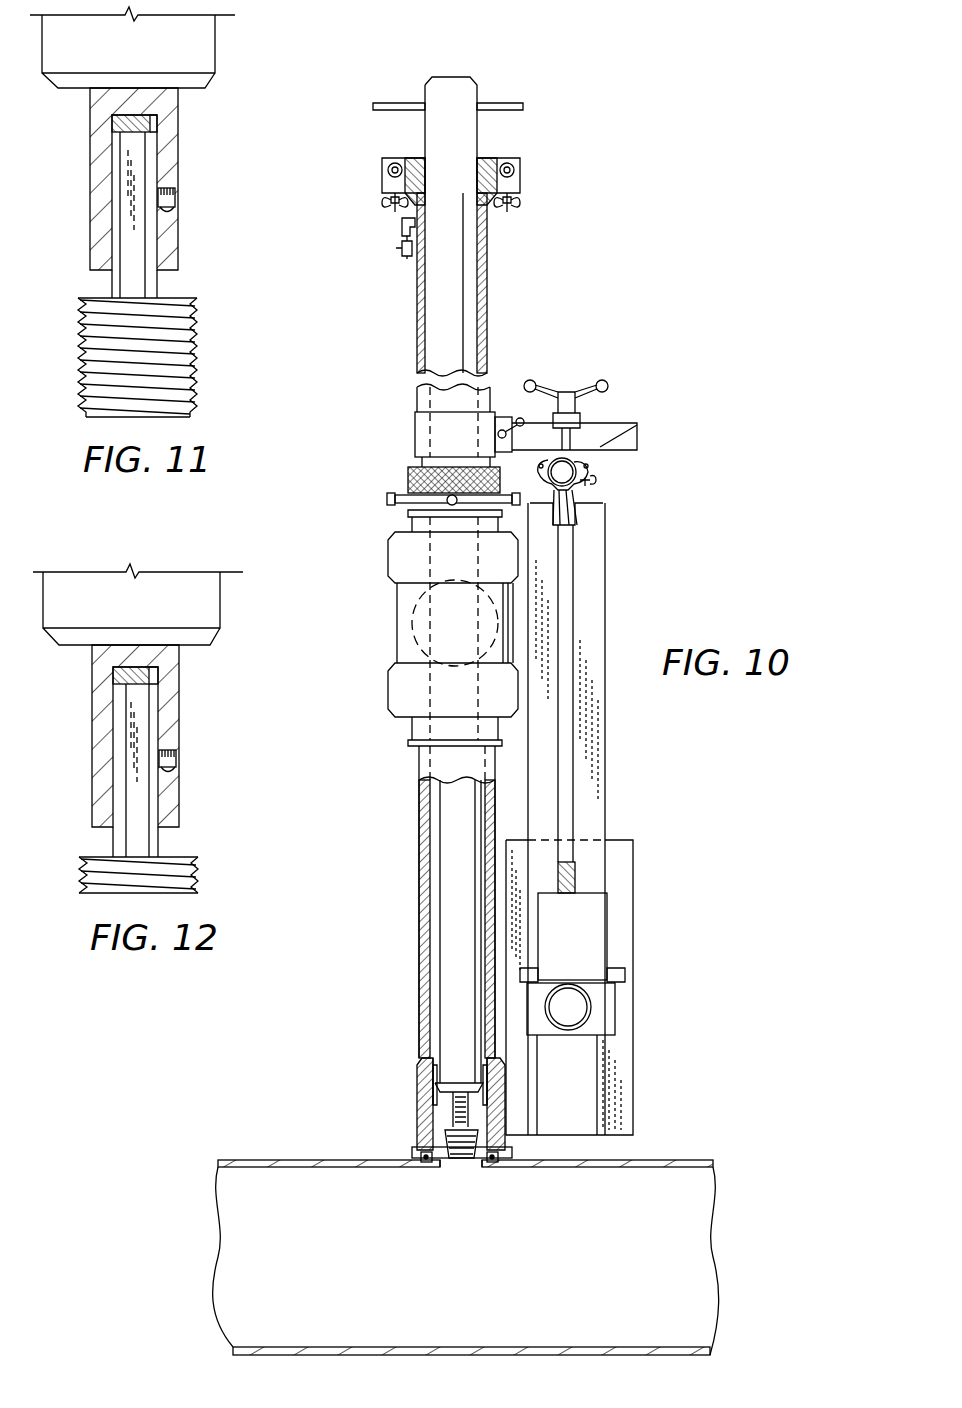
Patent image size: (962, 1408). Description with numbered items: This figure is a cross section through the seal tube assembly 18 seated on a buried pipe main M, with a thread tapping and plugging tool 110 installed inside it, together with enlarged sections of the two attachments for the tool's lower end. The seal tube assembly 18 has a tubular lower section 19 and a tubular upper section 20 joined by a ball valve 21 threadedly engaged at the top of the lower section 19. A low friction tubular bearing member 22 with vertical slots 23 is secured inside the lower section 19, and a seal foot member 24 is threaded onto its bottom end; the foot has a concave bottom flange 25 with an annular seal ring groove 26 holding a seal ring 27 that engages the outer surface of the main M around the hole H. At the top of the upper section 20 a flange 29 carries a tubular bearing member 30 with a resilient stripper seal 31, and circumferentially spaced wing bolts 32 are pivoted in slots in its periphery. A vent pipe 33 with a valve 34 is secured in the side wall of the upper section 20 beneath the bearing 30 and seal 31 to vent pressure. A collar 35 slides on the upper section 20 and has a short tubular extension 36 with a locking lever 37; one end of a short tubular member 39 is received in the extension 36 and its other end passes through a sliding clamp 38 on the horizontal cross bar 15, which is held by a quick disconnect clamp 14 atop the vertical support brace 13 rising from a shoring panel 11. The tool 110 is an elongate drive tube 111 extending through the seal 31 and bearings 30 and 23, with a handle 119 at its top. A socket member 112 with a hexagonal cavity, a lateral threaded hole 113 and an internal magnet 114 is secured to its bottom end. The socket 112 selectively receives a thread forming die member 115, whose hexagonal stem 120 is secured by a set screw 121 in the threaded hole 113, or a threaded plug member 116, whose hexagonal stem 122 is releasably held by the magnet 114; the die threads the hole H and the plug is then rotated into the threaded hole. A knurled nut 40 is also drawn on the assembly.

In FIG. 10, the flat rectangular panel 11 is at (627, 894).
In FIG. 10, the vertical support brace 13 is at (595, 585).
In FIG. 10, the quick disconnect clamp 14 is at (605, 510).
In FIG. 10, the horizontal cross bar 15 is at (588, 464).
In FIG. 10, the seal tube assembly 18 is at (458, 330).
In FIG. 10, the tubular lower section 19 is at (419, 847).
In FIG. 10, the tubular upper section 20 is at (417, 341).
In FIG. 10, the ball valve 21 is at (470, 637).
In FIG. 10, the tubular bearing member 22 is at (417, 1112).
In FIG. 10, the vertical slots 23 is at (406, 1077).
In FIG. 10, the seal foot member 24 is at (406, 1077).
In FIG. 10, the concave bottom flange 25 is at (412, 1152).
In FIG. 10, the annular seal ring groove 26 is at (436, 1186).
In FIG. 10, the seal ring 27 is at (427, 1167).
In FIG. 10, the flange 29 is at (522, 165).
In FIG. 10, the tubular bearing member 30 is at (497, 205).
In FIG. 10, the stripper seal 31 is at (471, 208).
In FIG. 10, the wing bolts 32 is at (392, 188).
In FIG. 10, the vent pipe 33 is at (402, 226).
In FIG. 10, the valve 34 is at (407, 258).
In FIG. 10, the collar 35 is at (420, 428).
In FIG. 10, the short tubular extension 36 is at (506, 417).
In FIG. 10, the locking lever 37 is at (523, 421).
In FIG. 10, the sliding clamp 38 is at (638, 436).
In FIG. 10, the short tubular member 39 is at (620, 423).
In FIG. 10, the knurled nut 40 is at (408, 482).
In FIG. 10, the thread tapping and plugging tool 110 is at (483, 584).
In FIG. 11, the drive tube 111 is at (138, 60).
In FIG. 12, the drive tube 111 is at (138, 604).
In FIG. 10, the drive tube 111 is at (465, 272).
In FIG. 11, the socket member 112 is at (165, 150).
In FIG. 12, the socket member 112 is at (167, 736).
In FIG. 10, the socket member 112 is at (468, 1112).
In FIG. 11, the threaded hole 113 is at (174, 210).
In FIG. 12, the threaded hole 113 is at (203, 770).
In FIG. 11, the magnet 114 is at (150, 120).
In FIG. 12, the magnet 114 is at (178, 671).
In FIG. 11, the thread forming die member 115 is at (190, 342).
In FIG. 10, the thread forming die member 115 is at (546, 1167).
In FIG. 12, the threaded plug member 116 is at (173, 875).
In FIG. 10, the threaded plug member 116 is at (479, 1152).
In FIG. 10, the handle 119 is at (490, 103).
In FIG. 11, the hexagonal stem 120 is at (125, 215).
In FIG. 11, the set screw 121 is at (176, 195).
In FIG. 12, the hexagonal stem 122 is at (90, 770).
In FIG. 10, the hole H is at (462, 1167).
In FIG. 10, the pipe main M is at (300, 1160).